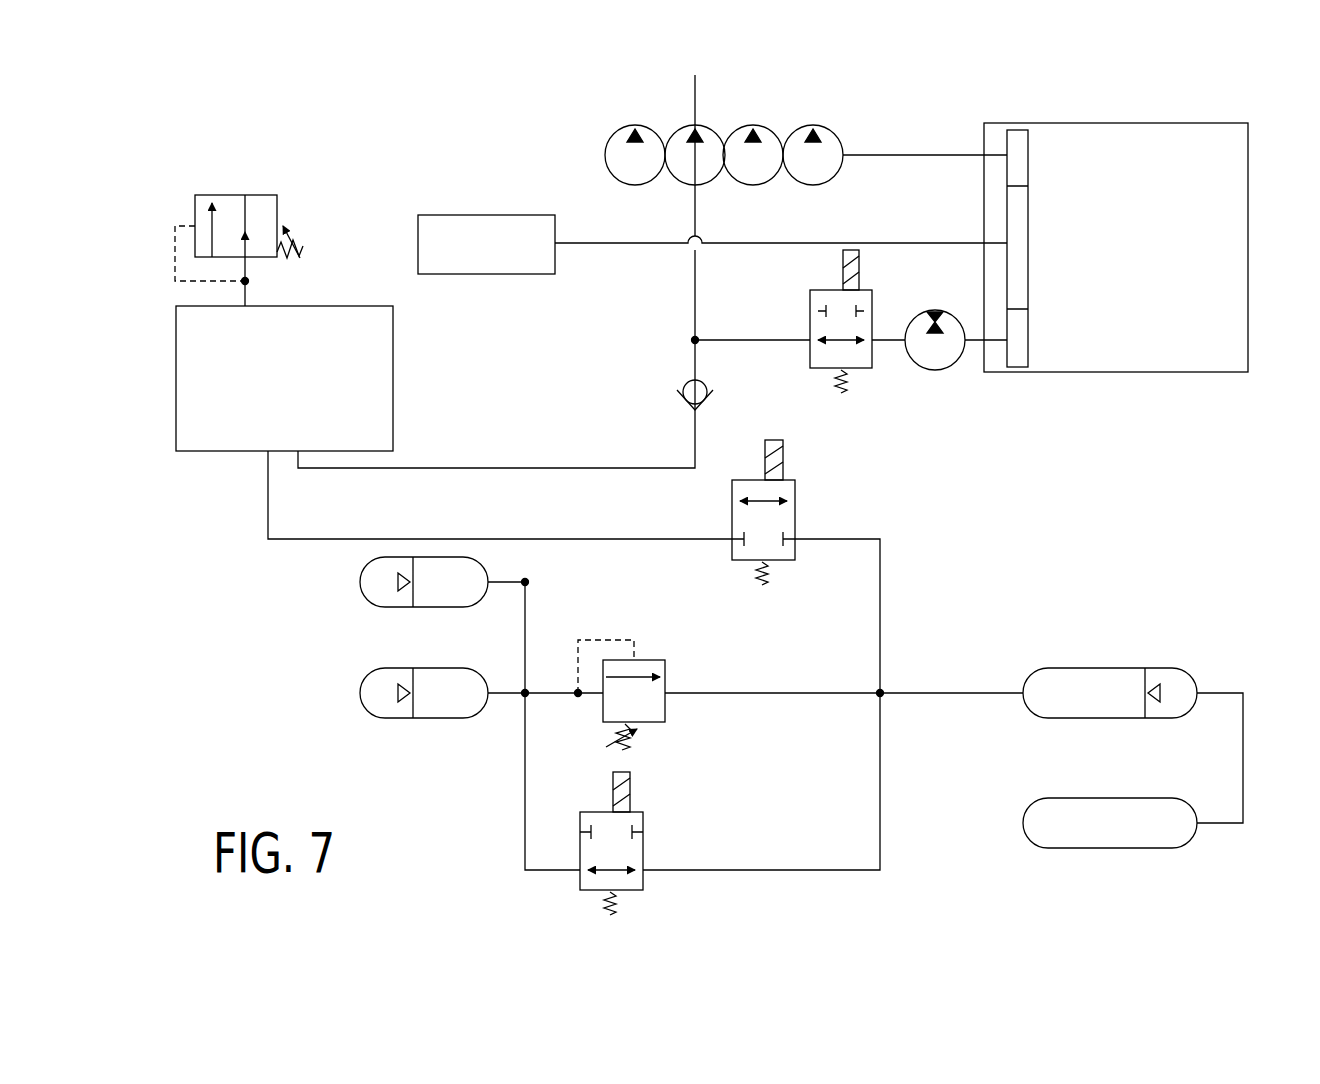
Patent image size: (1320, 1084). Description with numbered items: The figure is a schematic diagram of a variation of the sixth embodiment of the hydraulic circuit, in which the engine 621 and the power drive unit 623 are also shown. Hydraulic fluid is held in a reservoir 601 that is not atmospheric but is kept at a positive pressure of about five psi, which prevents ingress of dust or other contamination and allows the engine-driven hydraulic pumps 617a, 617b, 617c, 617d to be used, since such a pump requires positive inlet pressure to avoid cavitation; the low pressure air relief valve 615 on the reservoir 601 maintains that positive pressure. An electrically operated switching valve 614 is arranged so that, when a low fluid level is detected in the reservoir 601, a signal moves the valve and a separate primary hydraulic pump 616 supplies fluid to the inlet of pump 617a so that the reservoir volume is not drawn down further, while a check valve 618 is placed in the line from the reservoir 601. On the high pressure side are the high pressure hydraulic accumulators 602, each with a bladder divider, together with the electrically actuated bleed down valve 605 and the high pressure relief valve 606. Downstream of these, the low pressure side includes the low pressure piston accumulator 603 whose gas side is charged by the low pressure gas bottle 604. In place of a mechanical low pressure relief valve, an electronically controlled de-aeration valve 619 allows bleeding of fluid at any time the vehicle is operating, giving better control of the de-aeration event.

The reservoir 601 is at (397, 407).
The high pressure hydraulic accumulators 602 is at (358, 586).
The low pressure piston accumulator 603 is at (1108, 665).
The low pressure gas bottle 604 is at (1068, 852).
The bleed down valve 605 is at (646, 829).
The high pressure relief valve 606 is at (668, 711).
The switching valve 614 is at (808, 302).
The low pressure air relief valve 615 is at (195, 212).
The primary hydraulic pump 616 is at (935, 374).
The hydraulic pump 617a is at (712, 130).
The hydraulic pump 617b is at (618, 130).
The hydraulic pump 617c is at (755, 185).
The hydraulic pump 617d is at (832, 130).
The check valve 618 is at (680, 397).
The de-aeration valve 619 is at (782, 563).
The engine 621 is at (495, 215).
The power drive unit 623 is at (1202, 375).